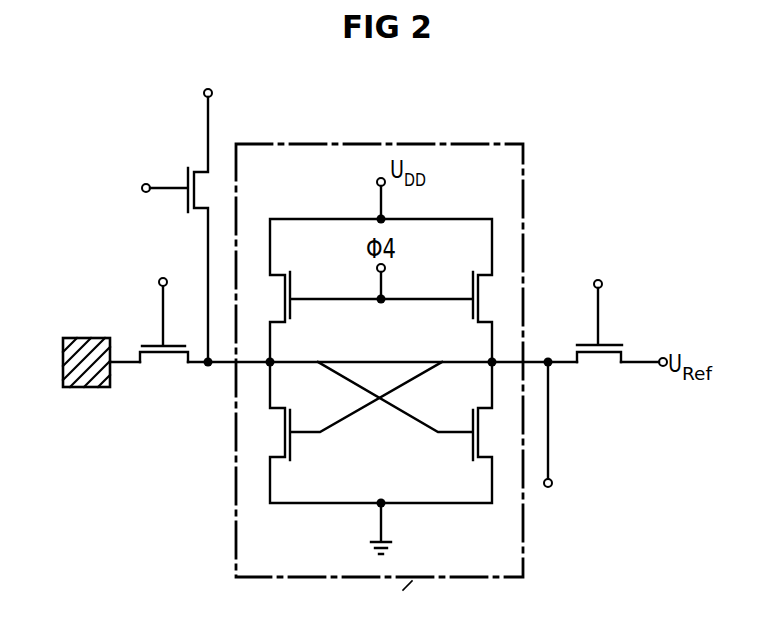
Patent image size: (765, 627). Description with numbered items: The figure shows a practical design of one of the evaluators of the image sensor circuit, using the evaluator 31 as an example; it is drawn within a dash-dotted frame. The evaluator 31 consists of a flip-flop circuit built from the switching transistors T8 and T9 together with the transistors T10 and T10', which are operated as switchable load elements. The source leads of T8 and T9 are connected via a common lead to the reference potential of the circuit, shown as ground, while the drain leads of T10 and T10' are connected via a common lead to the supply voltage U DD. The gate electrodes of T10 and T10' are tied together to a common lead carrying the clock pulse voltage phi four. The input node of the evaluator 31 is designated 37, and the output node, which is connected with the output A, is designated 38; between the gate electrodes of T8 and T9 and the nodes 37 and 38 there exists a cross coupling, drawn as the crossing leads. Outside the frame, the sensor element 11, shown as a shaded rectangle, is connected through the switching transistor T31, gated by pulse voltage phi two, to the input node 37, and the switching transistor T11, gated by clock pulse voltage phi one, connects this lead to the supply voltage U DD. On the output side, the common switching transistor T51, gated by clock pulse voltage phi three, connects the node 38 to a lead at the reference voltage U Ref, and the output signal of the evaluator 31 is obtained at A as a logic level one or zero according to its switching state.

The sensor element 11 is at (86, 346).
The evaluator 31 is at (466, 578).
The input node 37 is at (282, 348).
The output node 38 is at (480, 348).
The switching transistor T11 is at (166, 212).
The switching transistor T31 is at (164, 323).
The transistor T10 is at (335, 293).
The transistor T10' is at (427, 293).
The switching transistor T8 is at (366, 414).
The switching transistor T9 is at (395, 414).
The common switching transistor T51 is at (599, 323).
The output A is at (548, 439).